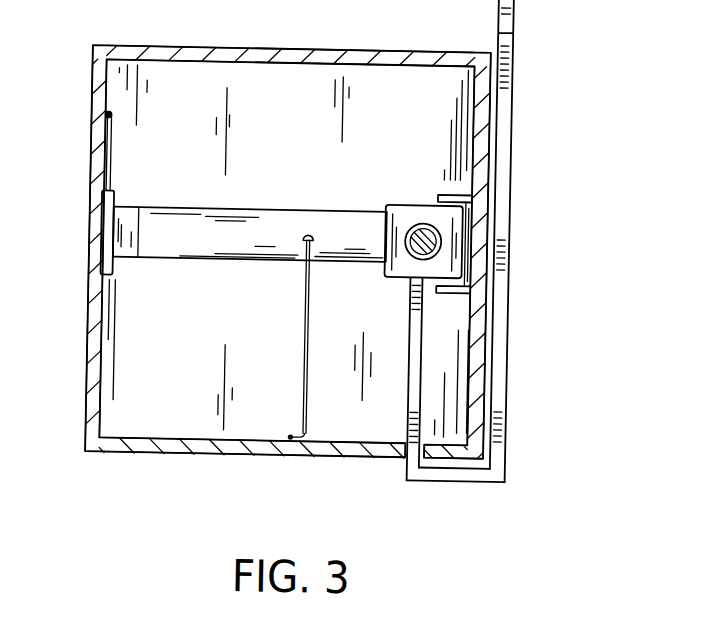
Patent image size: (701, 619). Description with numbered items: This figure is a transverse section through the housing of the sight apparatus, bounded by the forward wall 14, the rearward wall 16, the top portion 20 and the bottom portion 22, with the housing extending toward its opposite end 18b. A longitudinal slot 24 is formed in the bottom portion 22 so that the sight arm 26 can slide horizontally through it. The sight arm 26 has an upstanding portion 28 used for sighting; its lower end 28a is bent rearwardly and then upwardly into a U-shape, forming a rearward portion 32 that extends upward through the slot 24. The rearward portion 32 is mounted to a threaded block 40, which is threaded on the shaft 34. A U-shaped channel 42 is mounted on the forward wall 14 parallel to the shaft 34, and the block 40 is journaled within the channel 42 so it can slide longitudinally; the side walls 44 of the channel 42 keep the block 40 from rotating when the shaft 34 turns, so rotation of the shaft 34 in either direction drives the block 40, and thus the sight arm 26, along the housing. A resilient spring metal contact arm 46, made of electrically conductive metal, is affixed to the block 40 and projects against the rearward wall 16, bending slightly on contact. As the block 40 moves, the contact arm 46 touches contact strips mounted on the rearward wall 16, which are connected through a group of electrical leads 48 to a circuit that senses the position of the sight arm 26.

The forward wall 14 is at (109, 208).
The rearward wall 16 is at (95, 372).
The opposite end 18b is at (291, 249).
The top portion 20 is at (239, 48).
The bottom portion 22 is at (261, 453).
The longitudinal slot 24 is at (411, 456).
The sight arm 26 is at (446, 496).
The upstanding portion 28 is at (504, 289).
The lower end of upstanding portion 28a is at (510, 416).
The rearward portion 32 is at (417, 338).
The shaft 34 is at (424, 220).
The threaded block 40 is at (401, 211).
The U-shaped channel 42 is at (470, 229).
The side walls 44 is at (444, 187).
The contact arm 46 is at (205, 237).
The electrical leads 48 is at (105, 119).